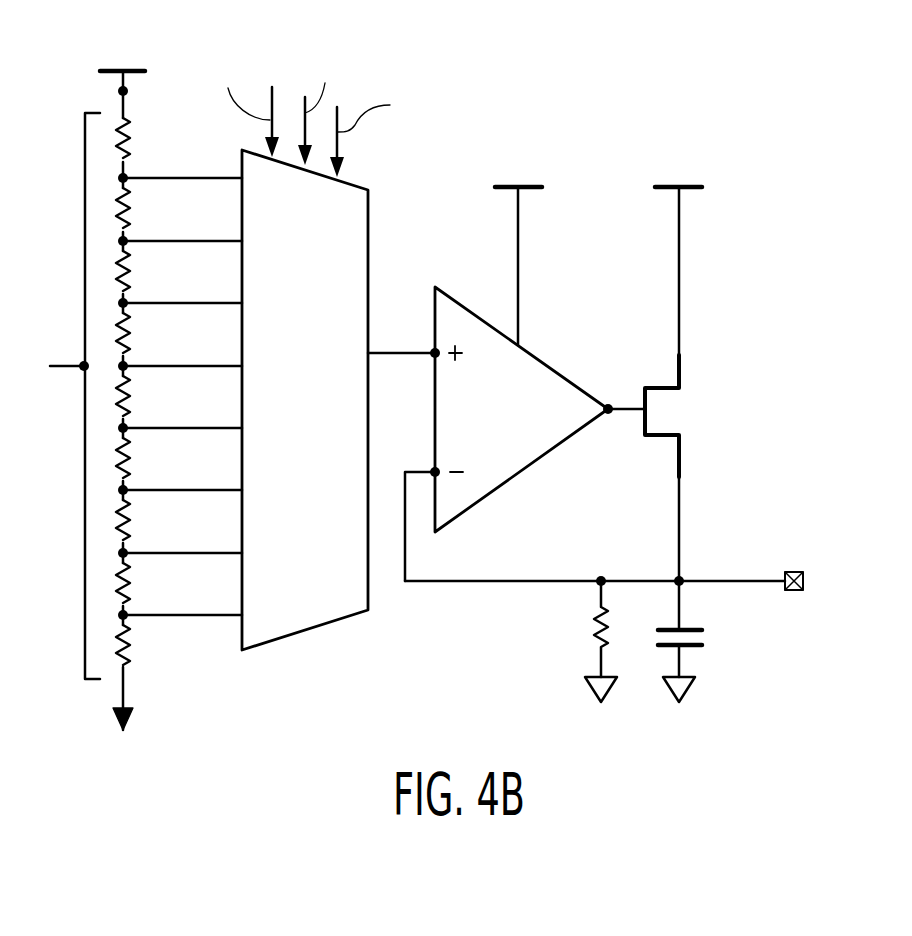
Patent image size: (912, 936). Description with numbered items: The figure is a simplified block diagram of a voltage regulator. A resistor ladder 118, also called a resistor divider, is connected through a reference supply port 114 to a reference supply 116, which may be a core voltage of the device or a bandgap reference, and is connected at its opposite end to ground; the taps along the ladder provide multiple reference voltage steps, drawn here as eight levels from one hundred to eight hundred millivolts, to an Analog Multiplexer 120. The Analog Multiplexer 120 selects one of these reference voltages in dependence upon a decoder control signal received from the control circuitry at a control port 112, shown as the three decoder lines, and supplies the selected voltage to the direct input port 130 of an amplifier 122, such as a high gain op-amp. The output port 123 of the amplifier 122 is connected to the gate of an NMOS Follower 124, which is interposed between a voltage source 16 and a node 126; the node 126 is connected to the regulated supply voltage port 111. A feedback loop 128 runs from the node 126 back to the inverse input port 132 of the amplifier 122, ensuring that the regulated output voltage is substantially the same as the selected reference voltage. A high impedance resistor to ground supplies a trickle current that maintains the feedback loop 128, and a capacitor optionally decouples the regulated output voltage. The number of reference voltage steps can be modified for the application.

The control port 112 is at (350, 50).
The reference supply port 114 is at (118, 91).
The reference supply 116 is at (135, 74).
The resistor ladder 118 is at (70, 362).
The Analog Multiplexer 120 is at (322, 461).
The amplifier 122 is at (485, 448).
The output port 123 is at (608, 414).
The NMOS Follower 124 is at (683, 375).
The node 126 is at (683, 578).
The feedback loop 128 is at (460, 583).
The direct input port 130 is at (434, 351).
The inverse input port 132 is at (435, 477).
The voltage source 16 is at (695, 190).
The regulated supply voltage port 111 is at (795, 592).